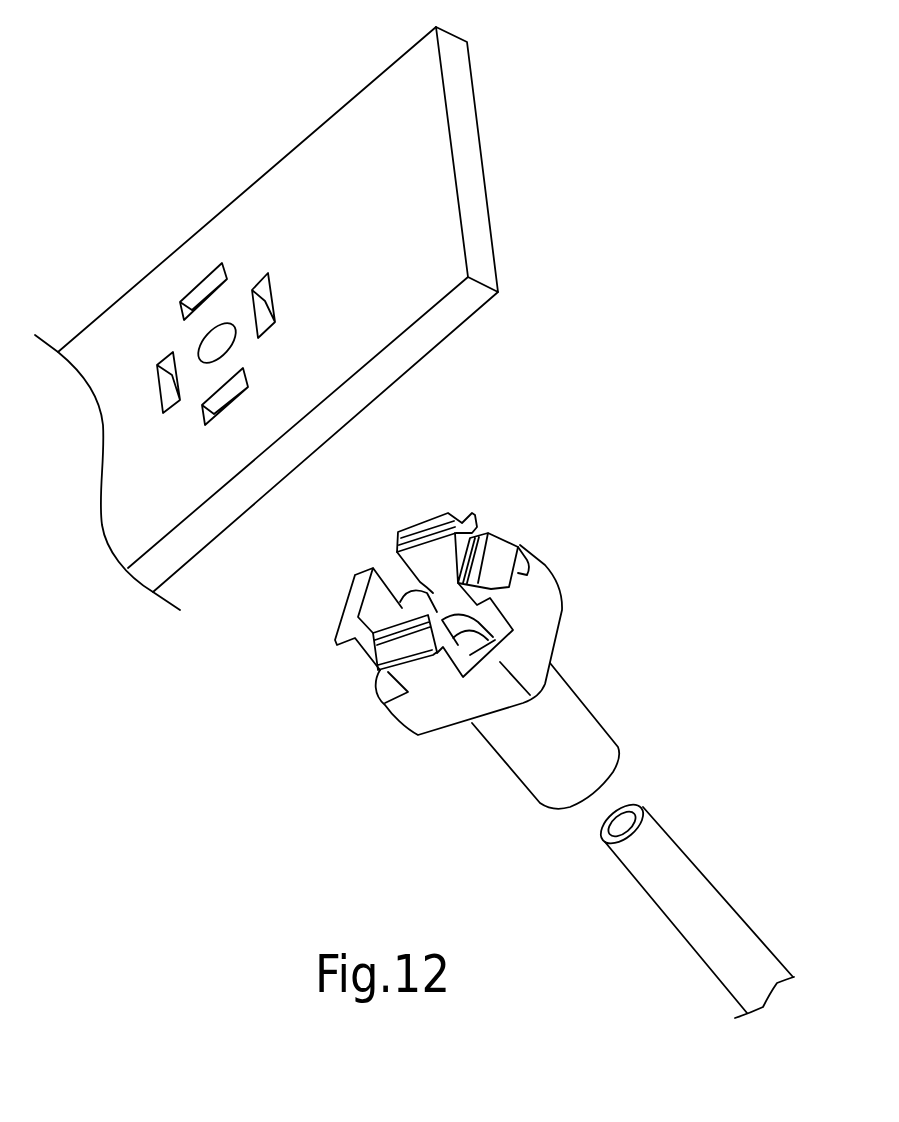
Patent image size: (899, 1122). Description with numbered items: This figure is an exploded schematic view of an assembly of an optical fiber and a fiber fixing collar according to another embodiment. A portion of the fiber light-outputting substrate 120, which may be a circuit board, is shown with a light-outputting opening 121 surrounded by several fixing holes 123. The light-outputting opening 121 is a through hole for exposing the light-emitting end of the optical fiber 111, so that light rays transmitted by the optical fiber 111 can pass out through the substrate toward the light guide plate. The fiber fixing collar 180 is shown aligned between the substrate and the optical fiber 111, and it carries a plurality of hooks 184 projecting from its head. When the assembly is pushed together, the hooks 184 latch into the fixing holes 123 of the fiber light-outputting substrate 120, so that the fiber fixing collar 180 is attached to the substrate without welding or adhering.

The optical fiber 111 is at (665, 860).
The fiber light-outputting substrate 120 is at (448, 188).
The light-outputting opening 121 is at (212, 343).
The fixing hole 123 is at (213, 273).
The fiber fixing collar 180 is at (580, 710).
The hook 184 is at (460, 513).